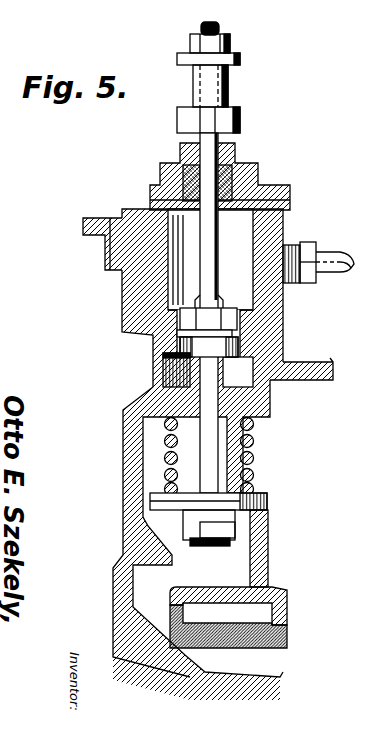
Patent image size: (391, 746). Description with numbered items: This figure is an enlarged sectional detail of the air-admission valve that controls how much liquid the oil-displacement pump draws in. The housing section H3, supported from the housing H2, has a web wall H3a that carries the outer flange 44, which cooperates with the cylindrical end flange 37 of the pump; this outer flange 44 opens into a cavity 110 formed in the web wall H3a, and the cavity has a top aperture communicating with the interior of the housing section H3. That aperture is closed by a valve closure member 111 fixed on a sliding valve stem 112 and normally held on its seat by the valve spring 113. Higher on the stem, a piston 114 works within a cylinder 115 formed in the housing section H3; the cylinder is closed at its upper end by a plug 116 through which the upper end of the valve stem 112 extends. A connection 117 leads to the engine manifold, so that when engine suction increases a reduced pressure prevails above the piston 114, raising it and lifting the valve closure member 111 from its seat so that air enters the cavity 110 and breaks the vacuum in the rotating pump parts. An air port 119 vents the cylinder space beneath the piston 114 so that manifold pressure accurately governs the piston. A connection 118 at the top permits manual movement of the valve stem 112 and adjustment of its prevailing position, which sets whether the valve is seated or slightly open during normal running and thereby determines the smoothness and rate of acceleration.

The connection 118 is at (212, 88).
The plug 116 is at (270, 187).
The connection 117 is at (337, 258).
The cylinder 115 is at (240, 302).
The piston 114 is at (262, 328).
The air port 119 is at (160, 383).
The sliding valve stem 112 is at (255, 438).
The valve spring 113 is at (255, 464).
The valve closure member 111 is at (267, 500).
The cavity 110 is at (243, 542).
The outer flange 44 is at (220, 590).
The cylindrical end flange 37 is at (243, 647).
The housing H2 is at (98, 232).
The housing section H3 is at (333, 366).
The web wall H3a is at (123, 458).